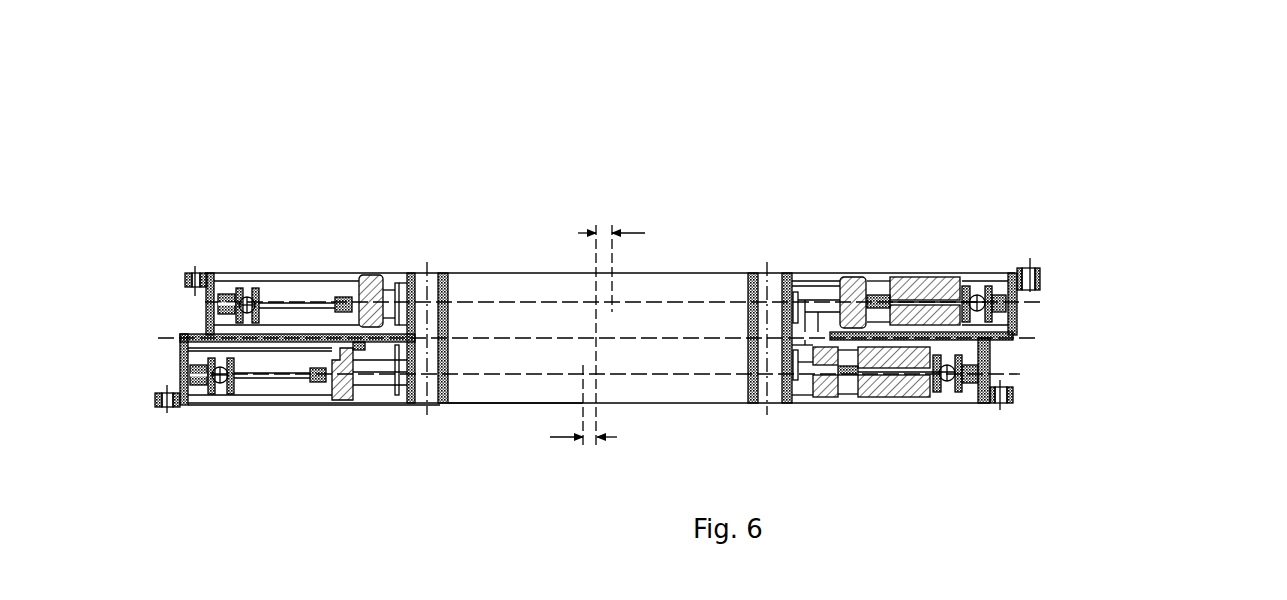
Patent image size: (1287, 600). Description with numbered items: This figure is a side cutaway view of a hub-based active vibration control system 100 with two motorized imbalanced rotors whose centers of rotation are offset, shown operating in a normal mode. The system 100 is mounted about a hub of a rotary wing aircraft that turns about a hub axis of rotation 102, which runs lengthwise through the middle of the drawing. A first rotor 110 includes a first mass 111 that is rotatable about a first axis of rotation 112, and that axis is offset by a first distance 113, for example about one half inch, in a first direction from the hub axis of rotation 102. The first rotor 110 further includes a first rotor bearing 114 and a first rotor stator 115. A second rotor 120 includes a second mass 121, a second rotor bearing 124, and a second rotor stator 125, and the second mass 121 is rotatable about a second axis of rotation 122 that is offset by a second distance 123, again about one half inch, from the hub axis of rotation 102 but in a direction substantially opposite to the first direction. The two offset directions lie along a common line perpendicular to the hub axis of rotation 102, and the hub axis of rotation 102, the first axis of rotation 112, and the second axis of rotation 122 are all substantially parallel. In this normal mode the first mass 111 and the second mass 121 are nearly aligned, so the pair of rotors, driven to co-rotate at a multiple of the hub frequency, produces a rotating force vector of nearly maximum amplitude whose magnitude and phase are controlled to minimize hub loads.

The active vibration control (AVC) system 100 is at (383, 130).
The hub axis of rotation 102 is at (597, 352).
The first rotor 110 is at (1037, 373).
The first mass 111 is at (905, 398).
The first axis of rotation 112 is at (582, 390).
The first distance 113 is at (563, 439).
The first rotor bearing 114 is at (955, 398).
The first rotor stator 115 is at (330, 334).
The second rotor 120 is at (1052, 302).
The second mass 121 is at (925, 276).
The second axis of rotation 122 is at (613, 293).
The second distance 123 is at (634, 237).
The second rotor bearing 124 is at (245, 287).
The second rotor stator 125 is at (856, 274).